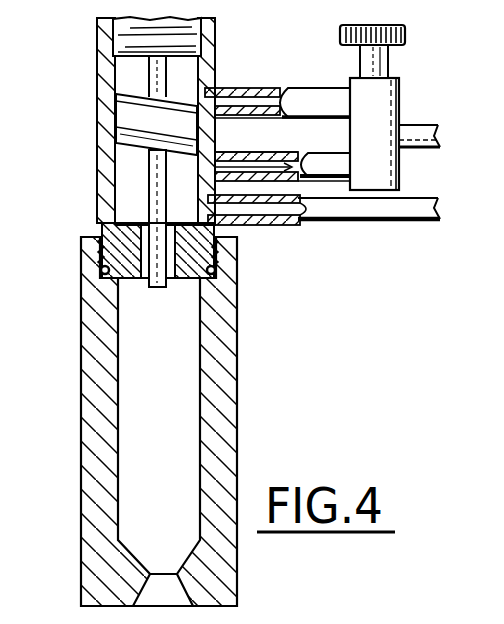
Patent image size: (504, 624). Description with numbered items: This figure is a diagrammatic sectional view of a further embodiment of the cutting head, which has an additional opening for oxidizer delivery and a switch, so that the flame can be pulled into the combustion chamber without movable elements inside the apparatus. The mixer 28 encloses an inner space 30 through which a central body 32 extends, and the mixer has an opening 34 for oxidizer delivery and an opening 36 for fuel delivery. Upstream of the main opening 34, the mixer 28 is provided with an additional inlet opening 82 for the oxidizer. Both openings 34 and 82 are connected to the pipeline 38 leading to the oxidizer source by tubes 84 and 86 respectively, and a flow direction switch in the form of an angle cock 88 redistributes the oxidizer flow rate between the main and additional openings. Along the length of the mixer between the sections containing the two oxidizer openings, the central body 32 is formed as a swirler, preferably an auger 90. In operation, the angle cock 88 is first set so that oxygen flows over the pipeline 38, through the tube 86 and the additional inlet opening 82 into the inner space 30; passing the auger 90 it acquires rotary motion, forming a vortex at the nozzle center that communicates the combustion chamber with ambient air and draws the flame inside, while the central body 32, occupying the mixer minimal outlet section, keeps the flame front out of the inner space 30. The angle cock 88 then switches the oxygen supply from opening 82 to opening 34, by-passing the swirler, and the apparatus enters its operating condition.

The mixer 28 is at (104, 50).
The inner space 30 is at (172, 78).
The auger 90 is at (133, 148).
The central body 32 is at (153, 198).
The additional inlet opening 82 is at (220, 95).
The tube 86 is at (297, 97).
The opening 34 is at (332, 168).
The tube 84 is at (313, 178).
The opening 36 is at (202, 208).
The angle cock 88 is at (400, 168).
The pipeline 38 is at (416, 135).